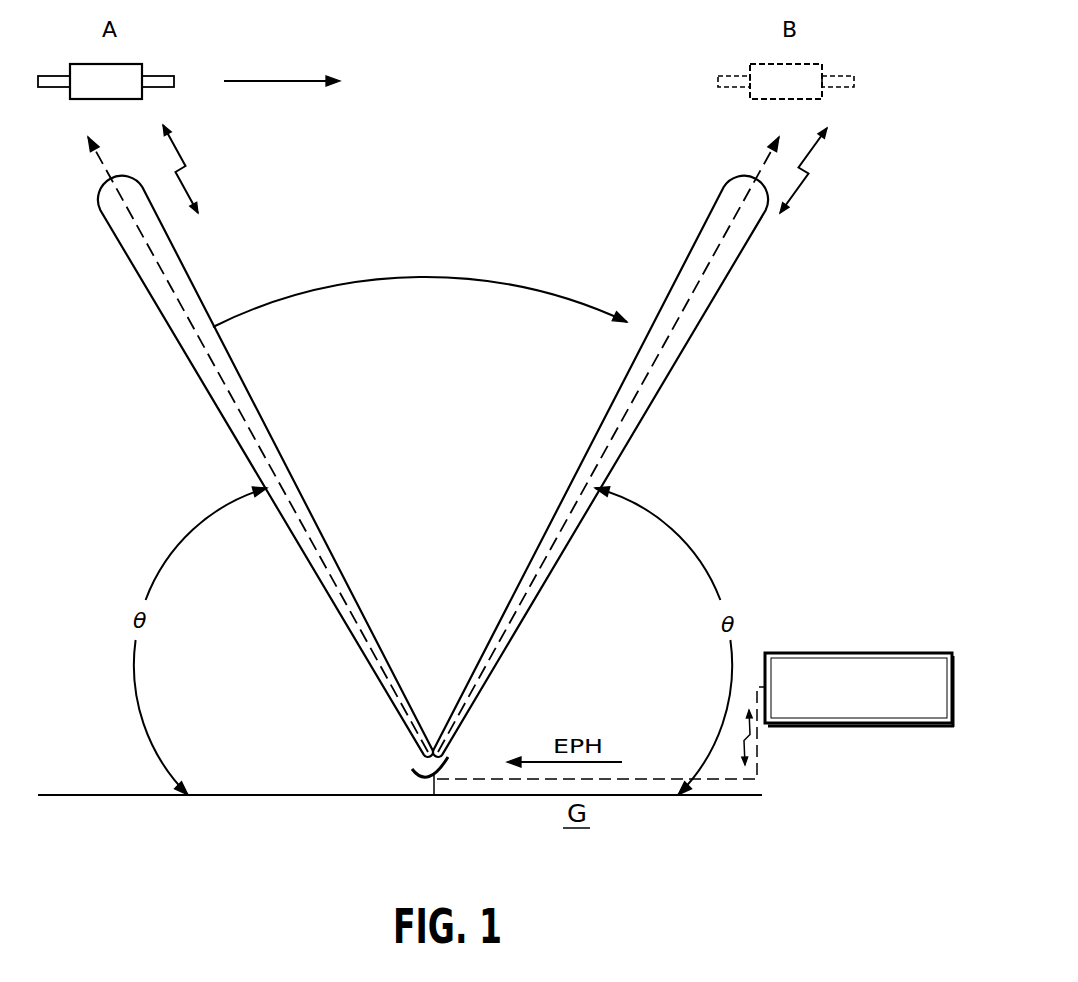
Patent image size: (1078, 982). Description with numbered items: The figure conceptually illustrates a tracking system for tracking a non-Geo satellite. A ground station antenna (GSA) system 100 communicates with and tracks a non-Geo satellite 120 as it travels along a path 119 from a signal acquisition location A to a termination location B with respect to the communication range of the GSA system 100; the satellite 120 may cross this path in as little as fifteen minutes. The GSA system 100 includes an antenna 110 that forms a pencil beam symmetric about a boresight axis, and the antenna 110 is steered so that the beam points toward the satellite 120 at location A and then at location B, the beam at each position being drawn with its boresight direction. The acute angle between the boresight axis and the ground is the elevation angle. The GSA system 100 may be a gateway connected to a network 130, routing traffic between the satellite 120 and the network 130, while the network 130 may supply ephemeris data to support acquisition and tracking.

The ground station antenna system 100 is at (400, 778).
The antenna 110 is at (447, 768).
The path 119 is at (250, 81).
The non-Geo satellite 120 is at (133, 64).
The network 130 is at (808, 653).